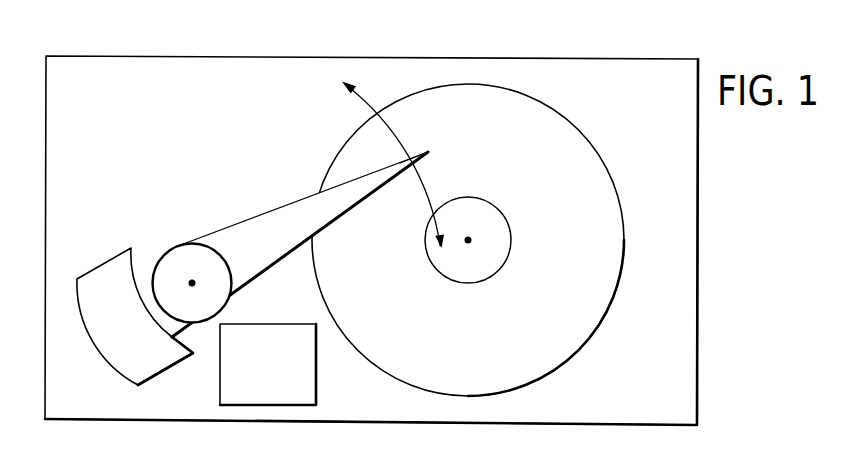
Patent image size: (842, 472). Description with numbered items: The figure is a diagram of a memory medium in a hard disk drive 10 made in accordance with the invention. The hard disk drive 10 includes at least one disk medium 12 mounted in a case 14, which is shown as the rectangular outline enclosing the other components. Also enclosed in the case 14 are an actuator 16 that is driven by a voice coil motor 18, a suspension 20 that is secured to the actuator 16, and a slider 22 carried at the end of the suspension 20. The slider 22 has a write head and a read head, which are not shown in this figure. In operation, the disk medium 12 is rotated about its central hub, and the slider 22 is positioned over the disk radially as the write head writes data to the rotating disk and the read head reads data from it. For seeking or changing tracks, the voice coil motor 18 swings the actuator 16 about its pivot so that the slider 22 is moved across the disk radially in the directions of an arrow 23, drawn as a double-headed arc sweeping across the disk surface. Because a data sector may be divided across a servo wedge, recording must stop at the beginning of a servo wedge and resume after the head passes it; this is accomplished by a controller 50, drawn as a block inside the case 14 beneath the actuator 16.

The hard disk drive 10 is at (720, 394).
The disk medium 12 is at (463, 102).
The case 14 is at (623, 78).
The actuator 16 is at (252, 245).
The voice coil motor 18 is at (102, 302).
The suspension 20 is at (355, 187).
The slider 22 is at (430, 154).
The arrow 23 is at (394, 125).
The controller 50 is at (254, 383).